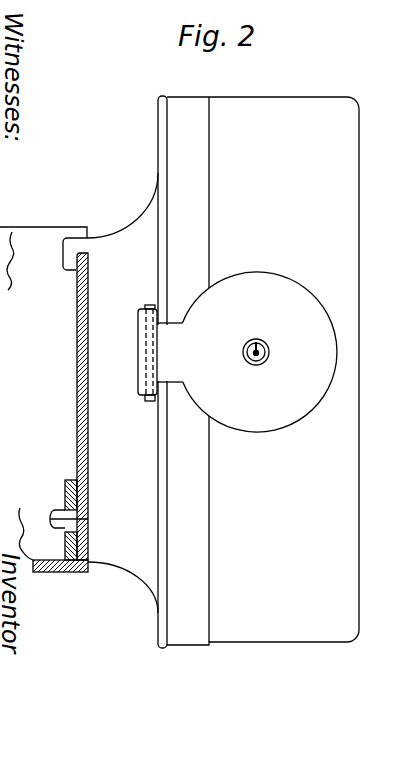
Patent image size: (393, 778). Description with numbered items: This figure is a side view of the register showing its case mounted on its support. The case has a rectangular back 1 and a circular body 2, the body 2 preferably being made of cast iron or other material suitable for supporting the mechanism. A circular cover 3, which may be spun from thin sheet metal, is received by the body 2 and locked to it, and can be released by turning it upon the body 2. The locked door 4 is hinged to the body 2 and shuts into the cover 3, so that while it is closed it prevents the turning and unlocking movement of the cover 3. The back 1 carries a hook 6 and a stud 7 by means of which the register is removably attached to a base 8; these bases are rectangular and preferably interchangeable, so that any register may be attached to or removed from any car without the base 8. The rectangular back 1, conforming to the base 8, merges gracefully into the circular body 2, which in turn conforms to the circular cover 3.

The rectangular back 1 is at (117, 228).
The circular body 2 is at (163, 92).
The circular cover 3 is at (313, 98).
The locked door 4 is at (267, 422).
The hook 6 is at (60, 265).
The stud 7 is at (55, 512).
The base 8 is at (30, 228).